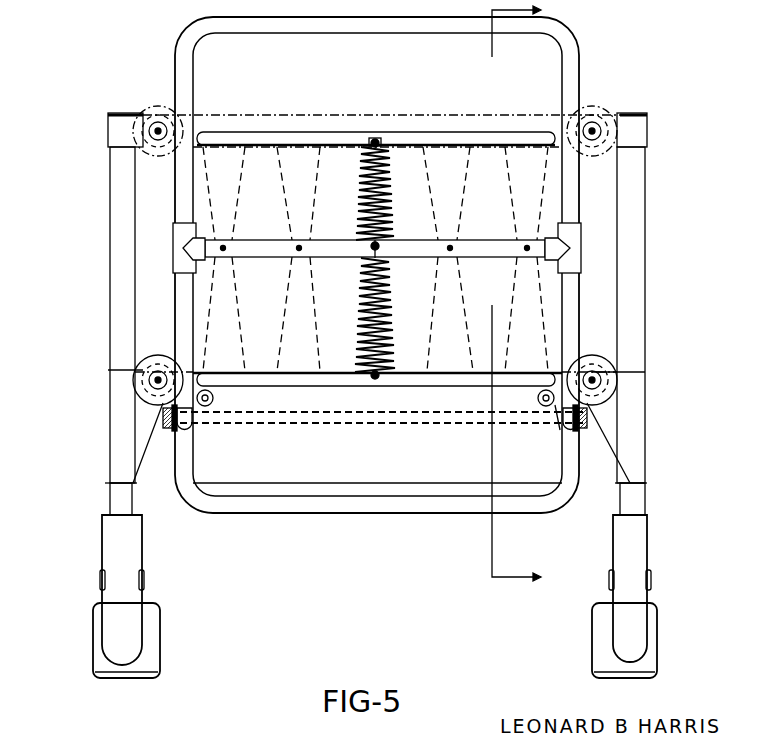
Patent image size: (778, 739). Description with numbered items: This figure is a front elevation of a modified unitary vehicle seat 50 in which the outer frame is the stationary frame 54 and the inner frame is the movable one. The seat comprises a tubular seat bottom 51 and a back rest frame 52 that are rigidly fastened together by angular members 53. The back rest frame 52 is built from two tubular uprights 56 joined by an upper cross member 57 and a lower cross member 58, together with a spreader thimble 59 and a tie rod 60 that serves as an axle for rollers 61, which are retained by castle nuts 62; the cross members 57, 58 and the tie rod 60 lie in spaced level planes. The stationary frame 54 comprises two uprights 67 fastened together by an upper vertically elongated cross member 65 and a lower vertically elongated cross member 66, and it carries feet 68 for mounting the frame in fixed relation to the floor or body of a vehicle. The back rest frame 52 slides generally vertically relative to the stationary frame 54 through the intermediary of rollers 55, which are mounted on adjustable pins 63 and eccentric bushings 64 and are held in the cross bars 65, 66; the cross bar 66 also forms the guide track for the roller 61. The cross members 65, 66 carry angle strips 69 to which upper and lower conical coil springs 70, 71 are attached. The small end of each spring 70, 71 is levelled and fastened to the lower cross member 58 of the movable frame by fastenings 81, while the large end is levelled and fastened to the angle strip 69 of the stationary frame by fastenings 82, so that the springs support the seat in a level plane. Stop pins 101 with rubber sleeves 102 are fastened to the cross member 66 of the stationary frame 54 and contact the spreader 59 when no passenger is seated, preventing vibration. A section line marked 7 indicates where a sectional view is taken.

The unitary vehicle seat 50 is at (254, 547).
The tubular seat bottom 51 is at (403, 512).
The back rest frame 52 is at (390, 55).
The angular members 53 is at (560, 423).
The stationary frame 54 is at (92, 269).
The rollers 55 is at (155, 109).
The tubular uprights 56 is at (177, 202).
The upper cross member 57 is at (302, 33).
The lower cross member 58 is at (313, 247).
The spreader thimble 59 is at (258, 427).
The tie rod 60 is at (490, 425).
The rollers 61 is at (157, 427).
The castle nuts 62 is at (160, 418).
The adjustable pins 63 is at (152, 127).
The eccentric bushings 64 is at (157, 132).
The upper vertically elongated cross member 65 is at (338, 88).
The lower vertically elongated cross member 66 is at (367, 458).
The uprights 67 is at (118, 210).
The feet 68 is at (125, 572).
The angle strips 69 is at (430, 138).
The upper conical coil spring 70 is at (388, 203).
The lower conical coil spring 71 is at (388, 312).
The fastenings 81 is at (368, 255).
The fastenings 82 is at (375, 143).
The stop pins 101 is at (540, 410).
The rubber sleeves 102 is at (208, 392).
The section line 7 is at (525, 294).